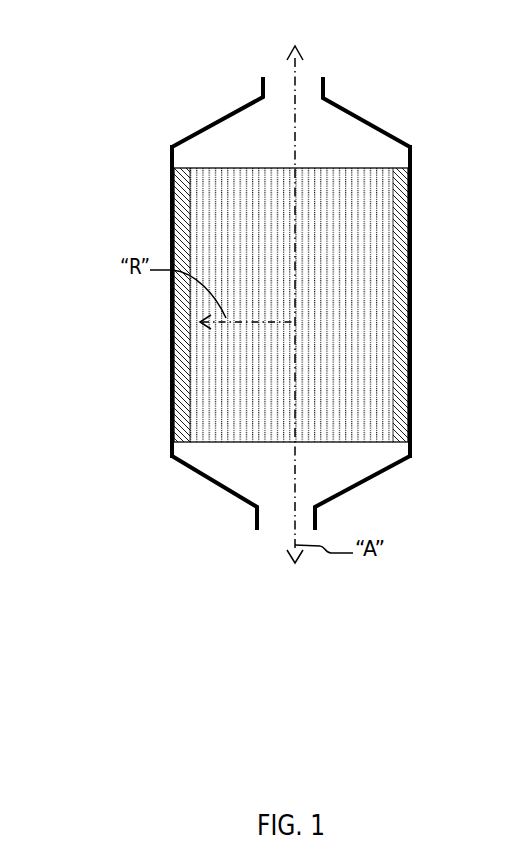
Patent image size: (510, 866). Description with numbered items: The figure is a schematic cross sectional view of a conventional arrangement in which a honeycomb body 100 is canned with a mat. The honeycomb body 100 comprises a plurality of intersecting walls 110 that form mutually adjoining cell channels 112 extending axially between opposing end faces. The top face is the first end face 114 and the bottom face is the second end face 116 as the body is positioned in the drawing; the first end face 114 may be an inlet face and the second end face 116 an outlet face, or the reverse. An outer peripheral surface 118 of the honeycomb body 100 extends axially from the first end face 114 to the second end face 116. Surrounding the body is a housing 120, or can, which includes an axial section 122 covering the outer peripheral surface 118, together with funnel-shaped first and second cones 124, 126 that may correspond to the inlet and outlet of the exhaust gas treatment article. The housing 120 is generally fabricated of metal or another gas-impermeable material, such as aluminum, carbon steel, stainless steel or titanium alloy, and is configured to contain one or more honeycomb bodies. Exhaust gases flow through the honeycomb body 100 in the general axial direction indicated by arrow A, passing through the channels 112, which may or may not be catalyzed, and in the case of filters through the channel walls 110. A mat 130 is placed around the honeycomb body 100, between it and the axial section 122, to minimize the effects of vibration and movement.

The honeycomb body 100 is at (248, 304).
The intersecting walls 110 is at (247, 392).
The cell channels 112 is at (228, 202).
The first end face 114 is at (227, 164).
The second end face 116 is at (246, 445).
The outer peripheral surface 118 is at (332, 301).
The housing 120 is at (332, 297).
The axial section 122 is at (412, 248).
The first cone 124 is at (360, 117).
The second cone 126 is at (372, 481).
The mat 130 is at (400, 228).